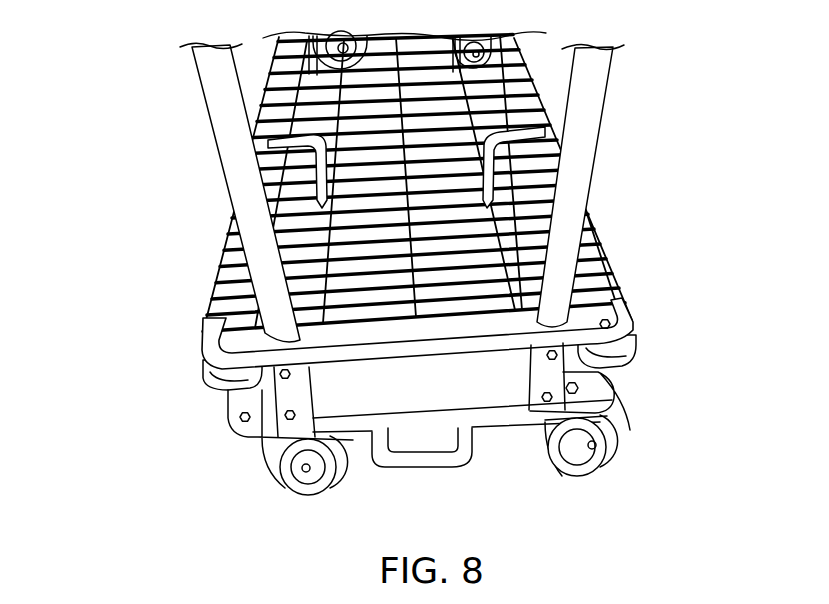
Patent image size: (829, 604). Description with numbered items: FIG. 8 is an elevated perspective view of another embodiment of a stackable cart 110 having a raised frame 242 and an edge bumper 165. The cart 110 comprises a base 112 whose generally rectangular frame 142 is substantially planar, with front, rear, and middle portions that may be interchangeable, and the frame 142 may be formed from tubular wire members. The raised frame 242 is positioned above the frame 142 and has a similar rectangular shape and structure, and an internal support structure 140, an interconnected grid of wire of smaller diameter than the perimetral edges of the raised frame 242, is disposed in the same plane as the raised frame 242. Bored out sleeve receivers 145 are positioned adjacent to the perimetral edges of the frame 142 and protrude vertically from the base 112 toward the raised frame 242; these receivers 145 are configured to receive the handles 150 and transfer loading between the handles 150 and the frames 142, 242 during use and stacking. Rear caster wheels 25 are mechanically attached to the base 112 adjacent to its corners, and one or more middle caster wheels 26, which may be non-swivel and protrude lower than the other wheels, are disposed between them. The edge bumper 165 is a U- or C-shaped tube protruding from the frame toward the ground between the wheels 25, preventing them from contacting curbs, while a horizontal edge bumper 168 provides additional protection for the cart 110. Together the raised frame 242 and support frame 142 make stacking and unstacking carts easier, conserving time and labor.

The stackable cart 110 is at (145, 55).
The base 112 is at (168, 468).
The handles 150 is at (213, 115).
The middle caster wheel 26 is at (262, 166).
The internal support structure 140 is at (280, 263).
The raised frame 242 is at (207, 328).
The horizontal edge bumper 168 is at (210, 378).
The frame 142 is at (230, 418).
The rear caster wheel 25 is at (270, 474).
The bored out sleeve receiver 145 is at (333, 474).
The edge bumper 165 is at (445, 463).